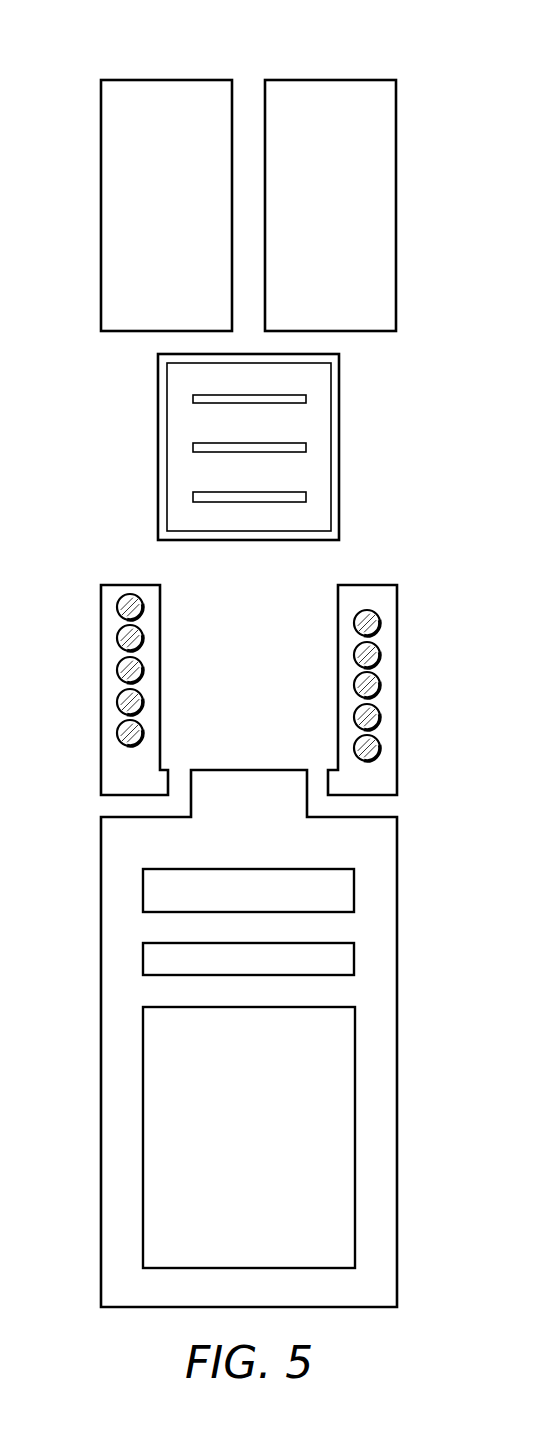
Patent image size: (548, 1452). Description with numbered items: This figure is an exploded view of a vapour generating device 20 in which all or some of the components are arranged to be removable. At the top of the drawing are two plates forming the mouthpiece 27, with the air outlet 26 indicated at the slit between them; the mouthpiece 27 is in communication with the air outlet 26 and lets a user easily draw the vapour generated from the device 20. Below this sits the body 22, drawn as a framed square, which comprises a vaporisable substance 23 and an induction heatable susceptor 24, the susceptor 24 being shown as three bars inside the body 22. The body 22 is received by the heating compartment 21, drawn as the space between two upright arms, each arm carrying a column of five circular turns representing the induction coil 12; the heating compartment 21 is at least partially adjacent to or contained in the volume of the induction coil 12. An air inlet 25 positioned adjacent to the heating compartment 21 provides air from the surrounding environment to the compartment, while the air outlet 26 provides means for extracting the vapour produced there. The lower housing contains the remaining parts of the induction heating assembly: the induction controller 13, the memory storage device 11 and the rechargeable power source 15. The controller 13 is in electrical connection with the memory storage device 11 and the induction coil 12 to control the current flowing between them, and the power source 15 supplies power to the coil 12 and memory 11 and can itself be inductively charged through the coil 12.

The vapour generating device 20 is at (77, 58).
The air outlet 26 is at (248, 88).
The mouthpiece 27 is at (397, 90).
The body 22 is at (339, 366).
The vaporisable substance 23 is at (316, 516).
The induction heatable susceptor 24 is at (193, 447).
The heating compartment 21 is at (187, 593).
The induction coil 12 is at (380, 684).
The air inlet 25 is at (108, 804).
The induction controller 13 is at (354, 878).
The memory storage device 11 is at (354, 955).
The rechargeable power source 15 is at (354, 1018).